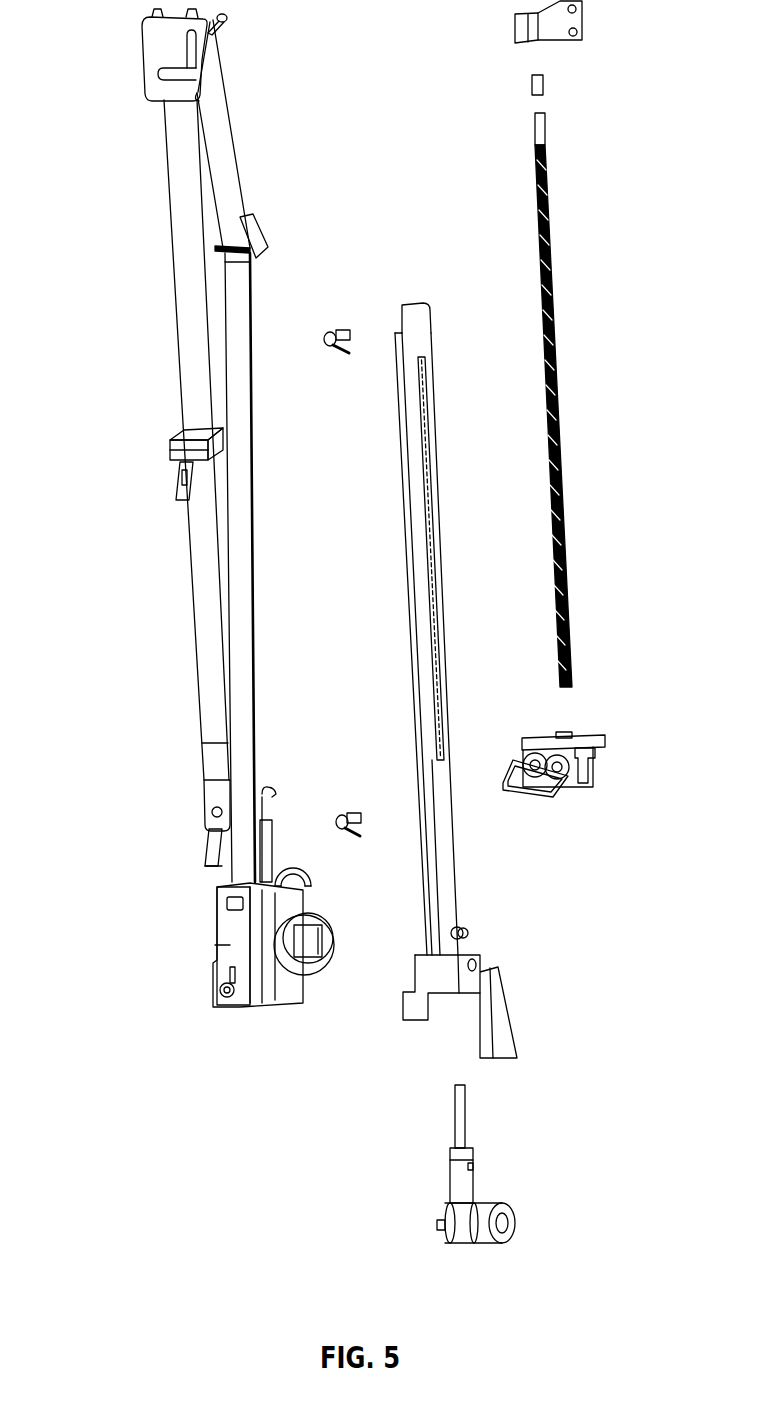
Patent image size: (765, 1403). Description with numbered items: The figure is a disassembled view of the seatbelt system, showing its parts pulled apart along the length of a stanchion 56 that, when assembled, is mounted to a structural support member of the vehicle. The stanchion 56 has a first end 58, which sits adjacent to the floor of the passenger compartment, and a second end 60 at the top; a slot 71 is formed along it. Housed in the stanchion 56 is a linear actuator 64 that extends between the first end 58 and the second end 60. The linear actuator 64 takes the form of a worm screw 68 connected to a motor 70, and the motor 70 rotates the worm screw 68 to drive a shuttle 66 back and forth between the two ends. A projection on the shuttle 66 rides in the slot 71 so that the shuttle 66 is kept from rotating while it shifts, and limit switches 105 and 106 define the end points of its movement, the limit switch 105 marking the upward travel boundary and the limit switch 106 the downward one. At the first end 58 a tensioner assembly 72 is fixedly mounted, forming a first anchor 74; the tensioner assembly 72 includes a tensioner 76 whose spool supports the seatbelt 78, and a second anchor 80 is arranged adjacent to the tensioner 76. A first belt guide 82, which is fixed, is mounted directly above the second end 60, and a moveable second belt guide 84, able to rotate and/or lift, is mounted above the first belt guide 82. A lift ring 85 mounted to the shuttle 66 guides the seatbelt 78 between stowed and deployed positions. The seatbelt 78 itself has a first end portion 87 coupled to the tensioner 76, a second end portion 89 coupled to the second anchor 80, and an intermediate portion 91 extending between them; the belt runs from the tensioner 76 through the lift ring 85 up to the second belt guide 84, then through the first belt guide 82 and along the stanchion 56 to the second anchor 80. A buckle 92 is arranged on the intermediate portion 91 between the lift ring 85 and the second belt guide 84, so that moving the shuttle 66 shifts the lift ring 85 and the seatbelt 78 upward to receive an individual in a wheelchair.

The stanchion 56 is at (427, 629).
The first end 58 is at (452, 950).
The second end 60 is at (418, 318).
The linear actuator 64 is at (542, 1015).
The shuttle 66 is at (580, 782).
The worm screw 68 is at (565, 470).
The motor 70 is at (470, 1180).
The slot 71 is at (430, 440).
The tensioner assembly 72 is at (267, 939).
The first anchor 74 is at (222, 905).
The tensioner 76 is at (318, 935).
The seatbelt 78 is at (192, 629).
The second anchor 80 is at (220, 873).
The first belt guide 82 is at (268, 240).
The second belt guide 84 is at (160, 48).
The lift ring 85 is at (547, 790).
The first end portion 87 is at (300, 878).
The second end portion 89 is at (212, 790).
The intermediate portion 91 is at (232, 287).
The buckle 92 is at (170, 447).
The limit switch 105 is at (325, 343).
The limit switch 106 is at (345, 812).